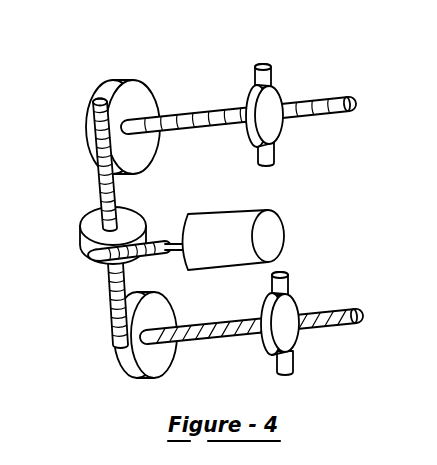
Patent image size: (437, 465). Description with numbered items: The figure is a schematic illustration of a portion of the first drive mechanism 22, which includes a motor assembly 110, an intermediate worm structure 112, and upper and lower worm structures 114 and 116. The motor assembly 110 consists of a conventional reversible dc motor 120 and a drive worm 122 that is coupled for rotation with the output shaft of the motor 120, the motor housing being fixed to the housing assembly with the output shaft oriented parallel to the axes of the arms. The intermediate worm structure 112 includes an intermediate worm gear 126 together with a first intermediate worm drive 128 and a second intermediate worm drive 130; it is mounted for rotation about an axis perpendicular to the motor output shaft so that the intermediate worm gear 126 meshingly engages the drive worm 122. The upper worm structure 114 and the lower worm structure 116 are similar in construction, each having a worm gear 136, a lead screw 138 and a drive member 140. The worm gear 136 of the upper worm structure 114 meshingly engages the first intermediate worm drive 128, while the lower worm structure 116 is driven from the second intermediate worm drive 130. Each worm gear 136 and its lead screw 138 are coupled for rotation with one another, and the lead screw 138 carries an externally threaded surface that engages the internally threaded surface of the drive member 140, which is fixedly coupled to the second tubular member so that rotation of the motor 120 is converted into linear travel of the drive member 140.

The first drive mechanism 22 is at (347, 198).
The motor assembly 110 is at (263, 216).
The intermediate worm structure 112 is at (84, 212).
The upper worm structure 114 is at (204, 96).
The lower worm structure 116 is at (213, 348).
The reversible dc motor 120 is at (272, 232).
The drive worm 122 is at (153, 241).
The intermediate worm gear 126 is at (84, 225).
The first intermediate worm drive 128 is at (98, 192).
The second intermediate worm drive 130 is at (108, 280).
The worm gear 136 is at (92, 100).
The lead screw 138 is at (350, 104).
The drive member 140 is at (277, 90).